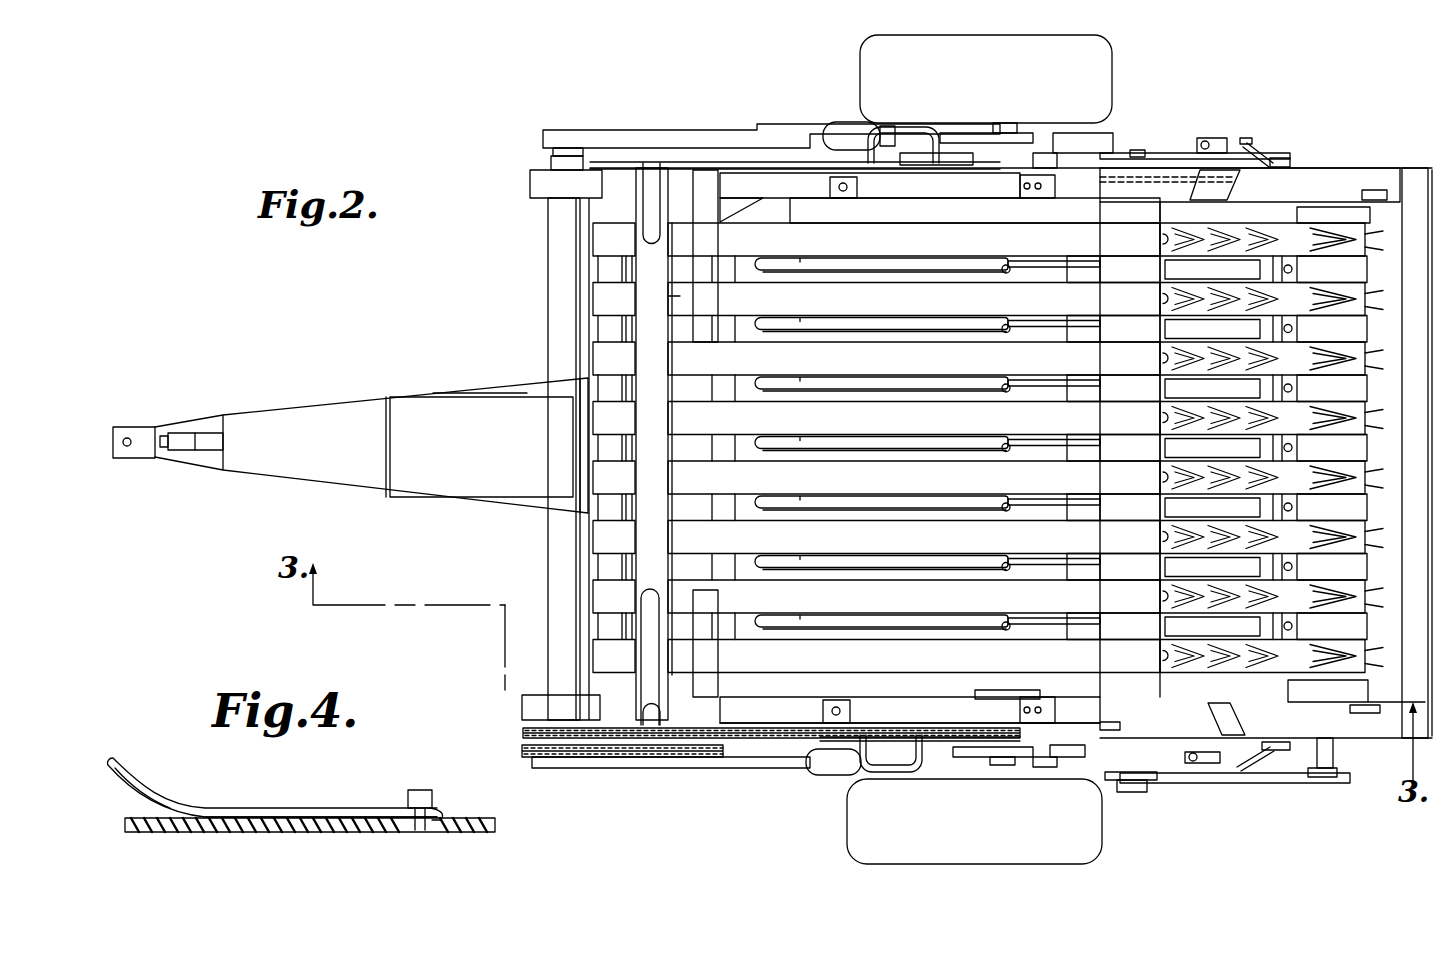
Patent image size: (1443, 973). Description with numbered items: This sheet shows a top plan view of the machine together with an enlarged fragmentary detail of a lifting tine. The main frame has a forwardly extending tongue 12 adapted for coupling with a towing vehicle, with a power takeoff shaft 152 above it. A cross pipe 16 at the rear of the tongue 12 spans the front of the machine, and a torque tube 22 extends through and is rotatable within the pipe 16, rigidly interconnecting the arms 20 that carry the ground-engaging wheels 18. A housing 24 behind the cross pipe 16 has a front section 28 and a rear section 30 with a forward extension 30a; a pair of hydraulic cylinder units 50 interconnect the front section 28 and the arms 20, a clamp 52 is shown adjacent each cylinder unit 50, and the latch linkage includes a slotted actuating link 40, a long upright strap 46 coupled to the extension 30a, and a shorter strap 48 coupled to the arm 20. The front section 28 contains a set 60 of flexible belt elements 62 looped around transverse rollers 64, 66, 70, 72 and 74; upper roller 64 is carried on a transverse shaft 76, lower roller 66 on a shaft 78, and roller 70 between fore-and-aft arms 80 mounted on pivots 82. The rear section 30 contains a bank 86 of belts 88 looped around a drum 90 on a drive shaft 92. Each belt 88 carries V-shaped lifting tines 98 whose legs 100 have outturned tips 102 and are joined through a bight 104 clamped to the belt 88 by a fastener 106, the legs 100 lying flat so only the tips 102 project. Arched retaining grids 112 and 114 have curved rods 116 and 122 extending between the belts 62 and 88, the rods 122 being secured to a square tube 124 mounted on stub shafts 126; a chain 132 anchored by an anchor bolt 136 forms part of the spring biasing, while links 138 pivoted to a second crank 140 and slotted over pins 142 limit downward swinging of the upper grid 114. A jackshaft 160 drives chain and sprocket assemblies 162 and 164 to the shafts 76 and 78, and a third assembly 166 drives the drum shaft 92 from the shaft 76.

In FIG. 2, the tongue 12 is at (200, 460).
In FIG. 2, the cross pipe 16 is at (548, 353).
In FIG. 2, the ground-engaging wheels 18 is at (988, 48).
In FIG. 2, the arms 20 is at (668, 130).
In FIG. 2, the torque tube 22 is at (563, 148).
In FIG. 2, the housing 24 is at (738, 166).
In FIG. 2, the front section 28 is at (680, 296).
In FIG. 2, the rear section 30 is at (1405, 162).
In FIG. 2, the forward extension 30a is at (1118, 150).
In FIG. 2, the actuating link 40 is at (1043, 133).
In FIG. 2, the upright strap 46 is at (1112, 133).
In FIG. 2, the strap 48 is at (1015, 123).
In FIG. 2, the hydraulic cylinder units 50 is at (844, 122).
In FIG. 2, the clamp 52 is at (939, 127).
In FIG. 2, the set of flexible belt elements 60 is at (592, 580).
In FIG. 2, the flexible belt elements 62 is at (641, 590).
In FIG. 2, the upper roller 64 is at (1130, 203).
In FIG. 2, the lower roller 66 is at (972, 213).
In FIG. 2, the roller 70 is at (600, 268).
In FIG. 2, the roller 72 is at (666, 354).
In FIG. 2, the roller 74 is at (730, 272).
In FIG. 2, the transverse shaft 76 is at (1130, 798).
In FIG. 2, the shaft 78 is at (990, 697).
In FIG. 2, the arms 80 is at (646, 162).
In FIG. 2, the pivots 82 is at (945, 172).
In FIG. 2, the bank of endless flexible belt elements 86 is at (1373, 460).
In FIG. 2, the endless flexible belt elements 88 is at (1355, 492).
In FIG. 4, the endless flexible belt elements 88 is at (285, 833).
In FIG. 2, the drum 90 is at (1383, 345).
In FIG. 2, the drive shaft 92 is at (1335, 755).
In FIG. 2, the lifting tines 98 is at (1316, 467).
In FIG. 4, the lifting tines 98 is at (330, 806).
In FIG. 4, the legs 100 is at (253, 808).
In FIG. 4, the outturned tips 102 is at (140, 749).
In FIG. 4, the bight 104 is at (432, 806).
In FIG. 4, the fastener 106 is at (422, 832).
In FIG. 2, the lower retaining grid 112 is at (1019, 550).
In FIG. 2, the upper retaining grid 114 is at (849, 466).
In FIG. 2, the curved rods 116 is at (1045, 569).
In FIG. 2, the curved rods 122 is at (910, 448).
In FIG. 2, the square tube 124 is at (1285, 200).
In FIG. 2, the stub shafts 126 is at (1290, 160).
In FIG. 2, the chain 132 is at (1232, 195).
In FIG. 2, the anchor bolt 136 is at (1050, 198).
In FIG. 2, the links 138 is at (1175, 150).
In FIG. 2, the second crank 140 is at (1265, 150).
In FIG. 2, the pin 142 is at (1043, 162).
In FIG. 2, the power takeoff shaft 152 is at (165, 432).
In FIG. 2, the jackshaft 160 is at (545, 517).
In FIG. 2, the chain and sprocket assembly 162 is at (605, 768).
In FIG. 2, the chain and sprocket assembly 164 is at (740, 764).
In FIG. 2, the chain and sprocket assembly 166 is at (1340, 793).